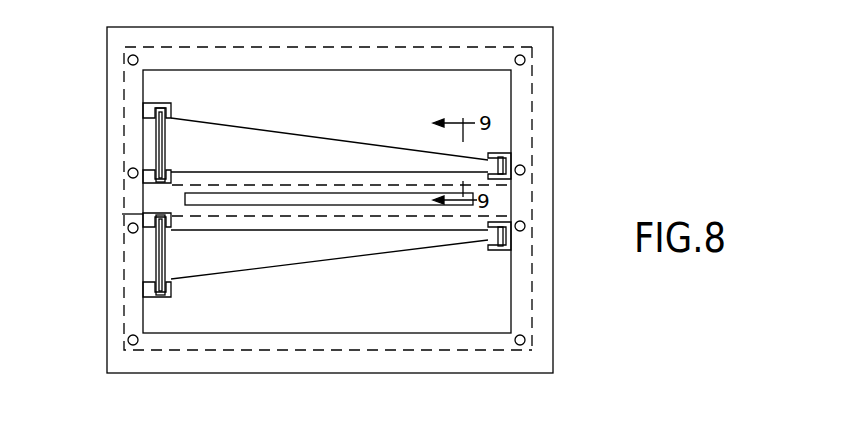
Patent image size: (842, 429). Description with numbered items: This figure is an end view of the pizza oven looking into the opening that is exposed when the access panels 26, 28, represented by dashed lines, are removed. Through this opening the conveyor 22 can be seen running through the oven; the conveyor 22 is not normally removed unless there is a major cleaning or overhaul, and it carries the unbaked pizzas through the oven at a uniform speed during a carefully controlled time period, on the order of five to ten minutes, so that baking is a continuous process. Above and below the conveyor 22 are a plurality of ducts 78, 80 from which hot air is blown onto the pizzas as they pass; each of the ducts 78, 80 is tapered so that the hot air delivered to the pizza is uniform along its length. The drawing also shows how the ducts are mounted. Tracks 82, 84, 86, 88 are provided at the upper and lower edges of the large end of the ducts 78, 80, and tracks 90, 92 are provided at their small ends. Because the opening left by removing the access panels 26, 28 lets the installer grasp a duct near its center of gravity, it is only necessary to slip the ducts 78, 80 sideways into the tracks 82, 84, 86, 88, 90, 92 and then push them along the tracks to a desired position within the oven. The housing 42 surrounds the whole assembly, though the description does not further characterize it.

The conveyor 22 is at (497, 208).
The access panel 26 is at (535, 84).
The access panel 28 is at (532, 317).
The housing 42 is at (553, 251).
The duct 78 is at (298, 105).
The duct 80 is at (289, 252).
The track 82 is at (170, 109).
The track 84 is at (148, 180).
The track 86 is at (148, 222).
The track 88 is at (150, 298).
The track 90 is at (511, 155).
The track 92 is at (512, 243).